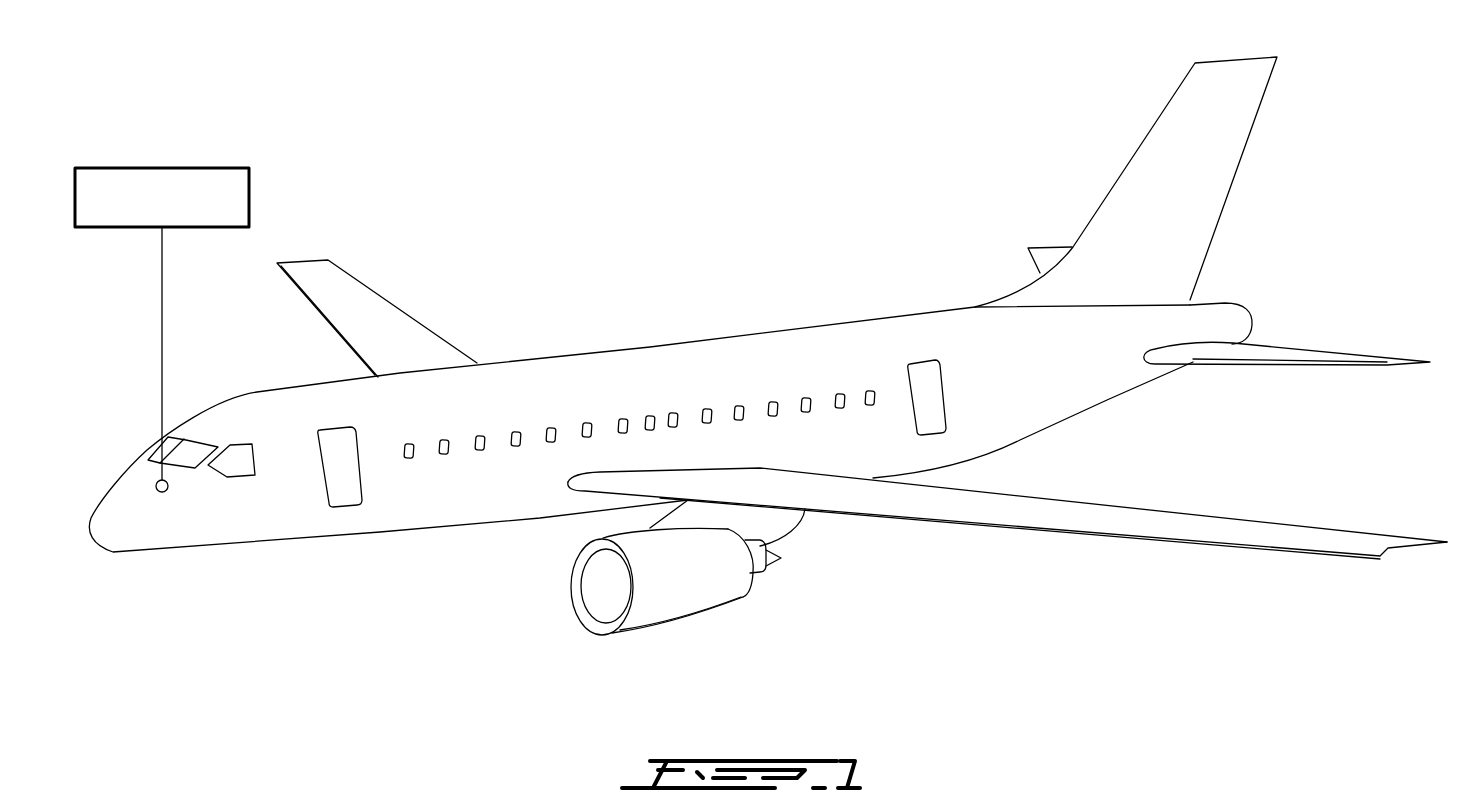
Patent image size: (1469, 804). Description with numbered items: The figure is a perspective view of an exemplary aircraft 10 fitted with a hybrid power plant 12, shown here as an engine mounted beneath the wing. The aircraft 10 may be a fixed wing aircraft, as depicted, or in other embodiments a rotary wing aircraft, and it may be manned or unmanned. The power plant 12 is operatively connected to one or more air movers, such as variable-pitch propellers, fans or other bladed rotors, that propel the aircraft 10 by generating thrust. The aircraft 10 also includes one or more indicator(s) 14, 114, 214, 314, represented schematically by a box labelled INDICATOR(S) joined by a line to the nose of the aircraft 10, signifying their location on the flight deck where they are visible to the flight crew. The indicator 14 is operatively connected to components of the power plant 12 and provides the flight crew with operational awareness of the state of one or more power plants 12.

The aircraft 10 is at (606, 182).
The hybrid power plant 12 is at (690, 598).
The indicator 14 is at (165, 167).
The indicator 114 is at (162, 294).
The indicator 214 is at (162, 294).
The indicator 314 is at (162, 294).